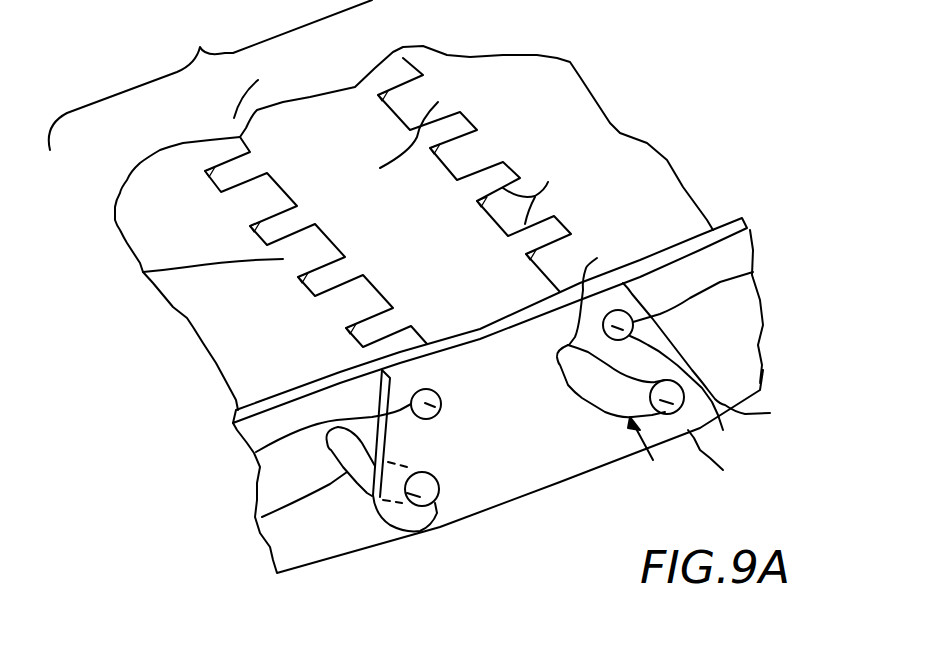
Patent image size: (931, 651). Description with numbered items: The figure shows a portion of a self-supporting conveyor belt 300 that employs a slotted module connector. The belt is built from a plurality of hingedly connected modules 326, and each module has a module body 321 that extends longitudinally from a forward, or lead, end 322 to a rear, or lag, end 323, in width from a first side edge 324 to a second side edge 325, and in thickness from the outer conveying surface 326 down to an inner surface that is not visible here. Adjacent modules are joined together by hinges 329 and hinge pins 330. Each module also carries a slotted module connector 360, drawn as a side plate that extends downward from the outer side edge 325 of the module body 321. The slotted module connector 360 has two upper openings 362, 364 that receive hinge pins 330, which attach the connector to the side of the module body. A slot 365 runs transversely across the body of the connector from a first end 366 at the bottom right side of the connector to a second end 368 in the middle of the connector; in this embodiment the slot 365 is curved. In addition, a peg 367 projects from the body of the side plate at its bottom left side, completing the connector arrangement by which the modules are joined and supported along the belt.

The self-supporting conveyor belt 300 is at (210, 75).
The module body 321 is at (213, 322).
The forward (lead) end 322 is at (143, 272).
The rear (lag) end 323 is at (275, 195).
The first side edge 324 is at (272, 87).
The second side edge 325 is at (775, 322).
The module 326 is at (287, 353).
The hinge 329 is at (545, 187).
The hinge pin 330 is at (440, 409).
The slotted module connector 360 is at (385, 532).
The upper opening 362 is at (258, 452).
The upper opening 364 is at (724, 288).
The slot 365 is at (259, 518).
The first end of slot 366 is at (726, 468).
The peg 367 is at (430, 527).
The second end of slot 368 is at (600, 287).